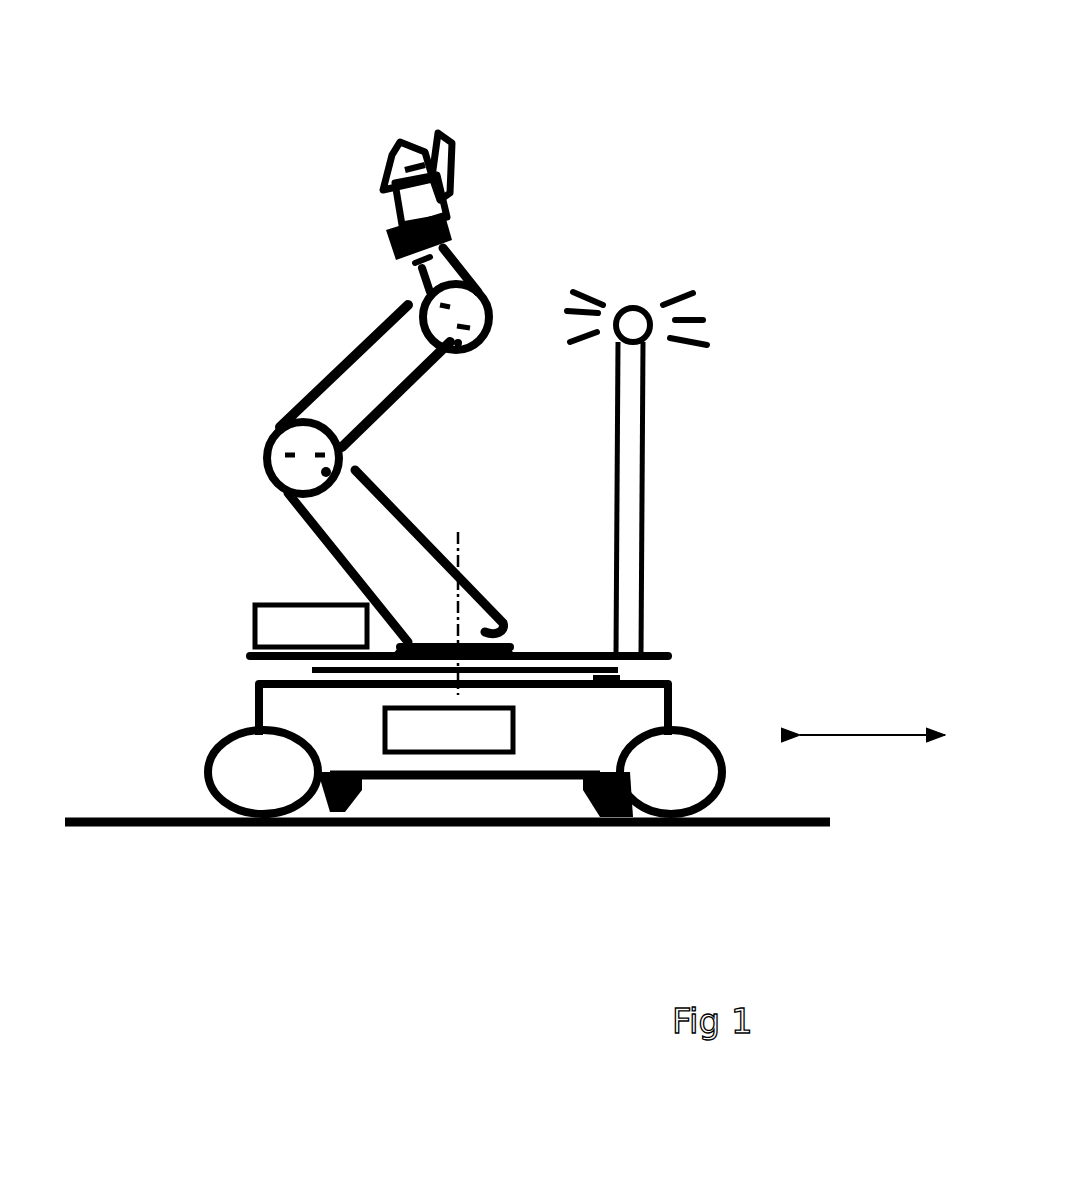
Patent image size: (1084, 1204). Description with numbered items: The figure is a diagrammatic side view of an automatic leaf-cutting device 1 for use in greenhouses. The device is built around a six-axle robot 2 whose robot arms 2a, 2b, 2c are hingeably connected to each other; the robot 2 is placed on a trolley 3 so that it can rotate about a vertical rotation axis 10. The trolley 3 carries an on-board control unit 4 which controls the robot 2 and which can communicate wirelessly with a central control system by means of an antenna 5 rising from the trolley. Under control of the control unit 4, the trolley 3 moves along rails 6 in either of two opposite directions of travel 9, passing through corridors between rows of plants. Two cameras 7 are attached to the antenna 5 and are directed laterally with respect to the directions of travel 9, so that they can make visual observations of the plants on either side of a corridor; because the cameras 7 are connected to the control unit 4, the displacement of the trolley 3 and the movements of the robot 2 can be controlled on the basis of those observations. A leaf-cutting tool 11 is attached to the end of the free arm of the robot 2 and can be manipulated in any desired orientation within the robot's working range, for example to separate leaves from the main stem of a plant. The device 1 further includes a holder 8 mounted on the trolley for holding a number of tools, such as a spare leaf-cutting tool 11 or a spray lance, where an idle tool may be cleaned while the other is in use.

The automatic leaf-cutting device 1 is at (690, 142).
The 6-axle robot 2 is at (213, 393).
The robot arm 2a is at (385, 527).
The robot arm 2b is at (393, 382).
The robot arm 2c is at (445, 268).
The trolley 3 is at (198, 668).
The on-board control unit 4 is at (440, 742).
The antenna 5 is at (635, 523).
The rails 6 is at (160, 823).
The cameras 7 is at (645, 330).
The holder 8 is at (287, 622).
The directions of travel 9 is at (858, 735).
The vertical rotation axis 10 is at (460, 533).
The leaf-cutting tool 11 is at (365, 160).